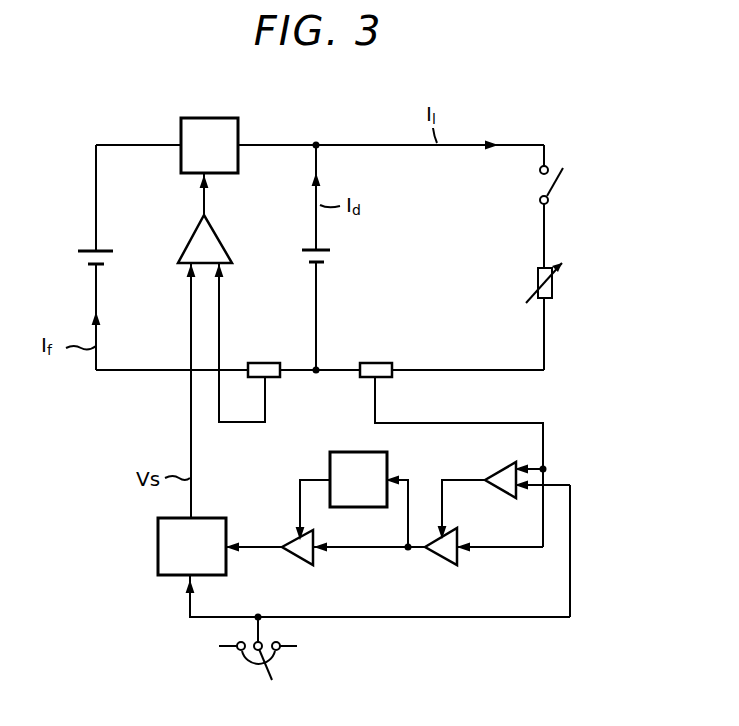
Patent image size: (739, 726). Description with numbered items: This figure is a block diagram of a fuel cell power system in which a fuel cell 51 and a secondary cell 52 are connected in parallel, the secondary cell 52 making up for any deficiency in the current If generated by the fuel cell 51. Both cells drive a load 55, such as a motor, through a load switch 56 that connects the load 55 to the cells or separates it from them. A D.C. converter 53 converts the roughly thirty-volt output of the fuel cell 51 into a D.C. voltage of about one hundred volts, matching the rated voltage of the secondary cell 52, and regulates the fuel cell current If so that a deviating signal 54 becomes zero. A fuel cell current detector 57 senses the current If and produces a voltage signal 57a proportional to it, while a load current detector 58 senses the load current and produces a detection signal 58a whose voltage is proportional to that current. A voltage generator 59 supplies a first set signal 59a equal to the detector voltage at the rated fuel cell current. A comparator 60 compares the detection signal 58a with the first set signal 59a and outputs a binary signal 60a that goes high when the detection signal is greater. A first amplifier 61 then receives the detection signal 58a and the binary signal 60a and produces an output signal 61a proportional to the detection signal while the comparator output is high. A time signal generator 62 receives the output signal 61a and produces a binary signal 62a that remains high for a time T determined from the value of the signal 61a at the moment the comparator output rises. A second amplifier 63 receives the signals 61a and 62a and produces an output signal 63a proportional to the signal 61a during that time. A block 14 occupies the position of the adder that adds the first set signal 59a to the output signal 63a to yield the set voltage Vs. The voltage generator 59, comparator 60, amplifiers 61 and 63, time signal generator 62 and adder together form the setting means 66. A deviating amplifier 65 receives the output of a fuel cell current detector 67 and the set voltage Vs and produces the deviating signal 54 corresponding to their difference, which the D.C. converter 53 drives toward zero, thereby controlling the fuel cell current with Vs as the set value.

The fuel cell current detector 67 is at (246, 125).
The D.C. converter 53 is at (209, 145).
The deviating signal 54 is at (204, 196).
The deviating amplifier 65 is at (205, 239).
The fuel cell 51 is at (78, 255).
The secondary cell 52 is at (333, 259).
The load switch 56 is at (536, 188).
The load 55 is at (557, 285).
The fuel cell current detector 57 is at (263, 362).
The load current detector 58 is at (375, 362).
The voltage signal 57a is at (268, 397).
The detection signal 58a is at (497, 421).
The comparator 60 is at (504, 466).
The binary signal 60a is at (461, 475).
The first amplifier 61 is at (458, 556).
The output signal 61a is at (418, 556).
The time signal generator 62 is at (358, 479).
The binary signal 62a is at (311, 478).
The second amplifier 63 is at (297, 562).
The output signal 63a is at (262, 545).
The control circuit 14 is at (192, 546).
The setting means 66 is at (582, 569).
The first set signal 59a is at (262, 628).
The voltage generator 59 is at (246, 665).